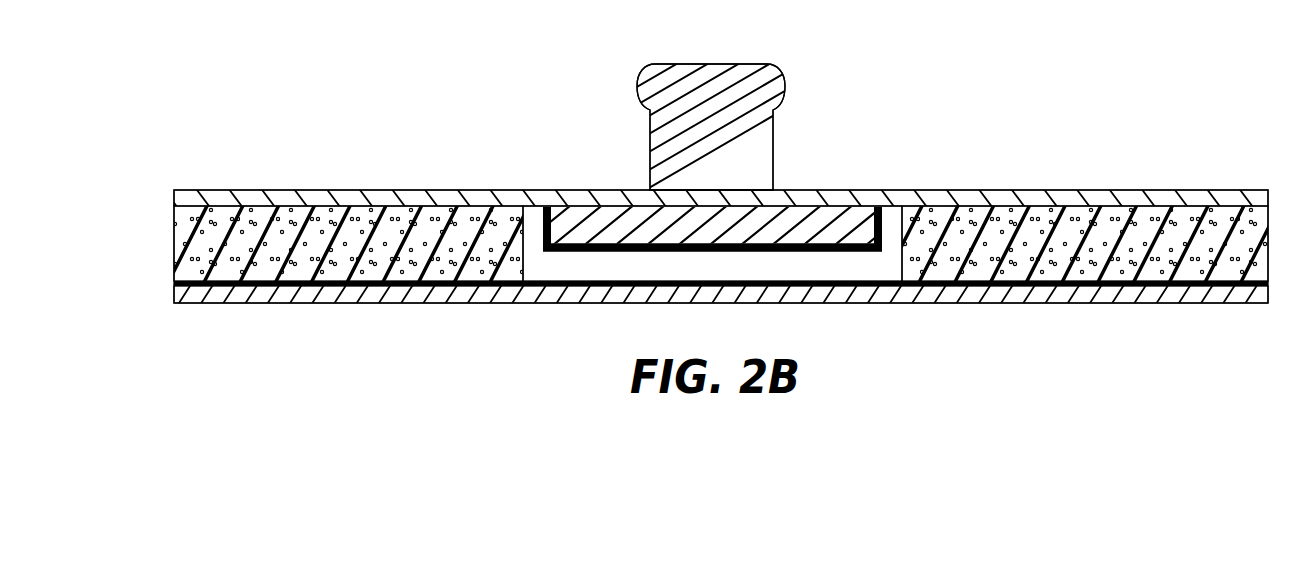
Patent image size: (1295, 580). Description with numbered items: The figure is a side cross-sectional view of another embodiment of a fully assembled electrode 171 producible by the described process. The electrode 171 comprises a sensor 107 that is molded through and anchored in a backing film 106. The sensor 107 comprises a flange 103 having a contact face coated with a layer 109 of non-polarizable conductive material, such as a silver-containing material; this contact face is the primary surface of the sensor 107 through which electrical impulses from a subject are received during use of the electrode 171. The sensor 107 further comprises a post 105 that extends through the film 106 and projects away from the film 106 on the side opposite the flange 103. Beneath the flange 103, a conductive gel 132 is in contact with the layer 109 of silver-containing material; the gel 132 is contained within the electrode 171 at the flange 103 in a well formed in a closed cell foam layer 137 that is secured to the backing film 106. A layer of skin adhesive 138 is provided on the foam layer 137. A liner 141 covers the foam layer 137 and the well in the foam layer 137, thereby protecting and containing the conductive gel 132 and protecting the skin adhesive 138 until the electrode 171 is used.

The electrode 171 is at (468, 34).
The post 105 is at (695, 78).
The sensor 107 is at (785, 140).
The flange 103 is at (820, 220).
The backing film 106 is at (212, 198).
The closed cell foam layer 137 is at (177, 248).
The skin adhesive 138 is at (176, 283).
The liner 141 is at (217, 293).
The layer of non-polarizable conductive material 109 is at (598, 252).
The conductive gel 132 is at (783, 270).